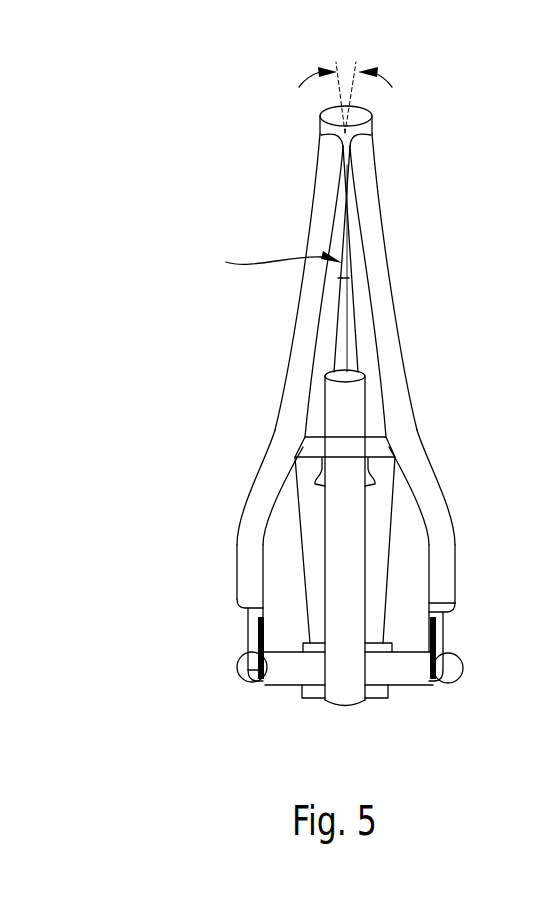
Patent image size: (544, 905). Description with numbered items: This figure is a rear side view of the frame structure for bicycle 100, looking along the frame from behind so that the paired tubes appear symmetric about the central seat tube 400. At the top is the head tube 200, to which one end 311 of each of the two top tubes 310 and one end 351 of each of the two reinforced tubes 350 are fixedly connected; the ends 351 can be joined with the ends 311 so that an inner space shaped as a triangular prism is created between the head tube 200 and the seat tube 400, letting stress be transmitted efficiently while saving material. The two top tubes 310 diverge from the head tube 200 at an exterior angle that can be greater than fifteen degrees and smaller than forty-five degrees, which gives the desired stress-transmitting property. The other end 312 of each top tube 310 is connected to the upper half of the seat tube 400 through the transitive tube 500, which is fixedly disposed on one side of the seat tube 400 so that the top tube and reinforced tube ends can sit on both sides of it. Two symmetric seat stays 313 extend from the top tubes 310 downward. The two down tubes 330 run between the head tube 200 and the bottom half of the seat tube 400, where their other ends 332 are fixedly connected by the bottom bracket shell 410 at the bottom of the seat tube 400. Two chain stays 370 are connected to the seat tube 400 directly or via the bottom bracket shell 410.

The frame structure for bicycle 100 is at (133, 128).
The head tube 200 is at (364, 114).
The top tube 310 is at (302, 323).
The one end of top tube 311 is at (332, 141).
The other end of top tube 312 is at (292, 423).
The seat stay 313 is at (258, 503).
The down tube 330 is at (315, 567).
The other end of down tube 332 is at (312, 628).
The reinforced tube 350 is at (320, 358).
The one end of reinforced tube 351 is at (338, 205).
The chain stay 370 is at (280, 687).
The seat tube 400 is at (348, 700).
The bottom bracket shell 410 is at (378, 698).
The transitive tube 500 is at (342, 448).